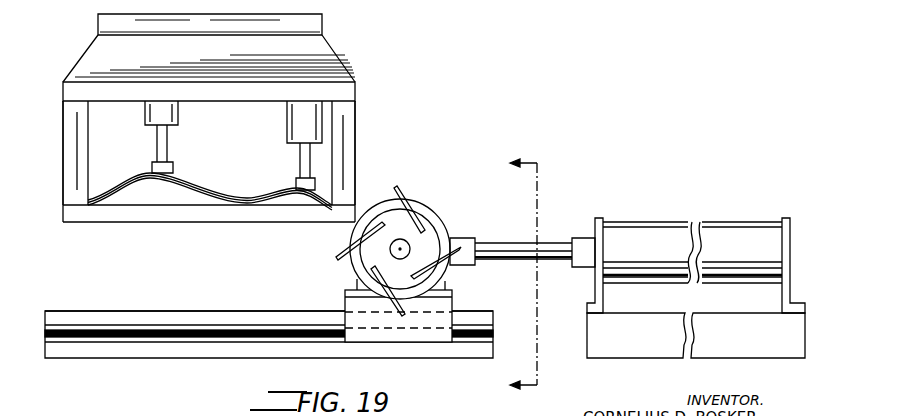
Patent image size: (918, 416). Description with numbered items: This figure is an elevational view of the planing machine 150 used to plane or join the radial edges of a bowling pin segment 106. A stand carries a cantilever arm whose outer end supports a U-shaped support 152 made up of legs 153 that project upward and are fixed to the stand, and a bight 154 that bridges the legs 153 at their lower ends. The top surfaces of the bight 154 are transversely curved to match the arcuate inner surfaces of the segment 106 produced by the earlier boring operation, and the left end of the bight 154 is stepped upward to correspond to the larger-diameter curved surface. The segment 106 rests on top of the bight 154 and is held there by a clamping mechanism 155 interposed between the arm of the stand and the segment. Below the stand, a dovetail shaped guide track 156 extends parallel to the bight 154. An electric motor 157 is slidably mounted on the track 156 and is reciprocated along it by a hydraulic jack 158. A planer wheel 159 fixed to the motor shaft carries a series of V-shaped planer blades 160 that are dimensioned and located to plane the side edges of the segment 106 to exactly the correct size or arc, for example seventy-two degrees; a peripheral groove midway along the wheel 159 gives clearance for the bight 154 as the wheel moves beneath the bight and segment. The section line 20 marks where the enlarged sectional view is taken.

The section line 20— 20 is at (513, 278).
The segment 106 is at (202, 180).
The planing machine 150 is at (222, 360).
The U-shaped support 152 is at (117, 222).
The legs 153 is at (79, 153).
The bight 154 is at (300, 214).
The clamping mechanism 155 is at (168, 150).
The guide track 156 is at (147, 317).
The electric motor 157 is at (441, 283).
The hydraulic jack 158 is at (655, 222).
The planer wheel 159 is at (352, 260).
The planer blades 160 is at (397, 188).